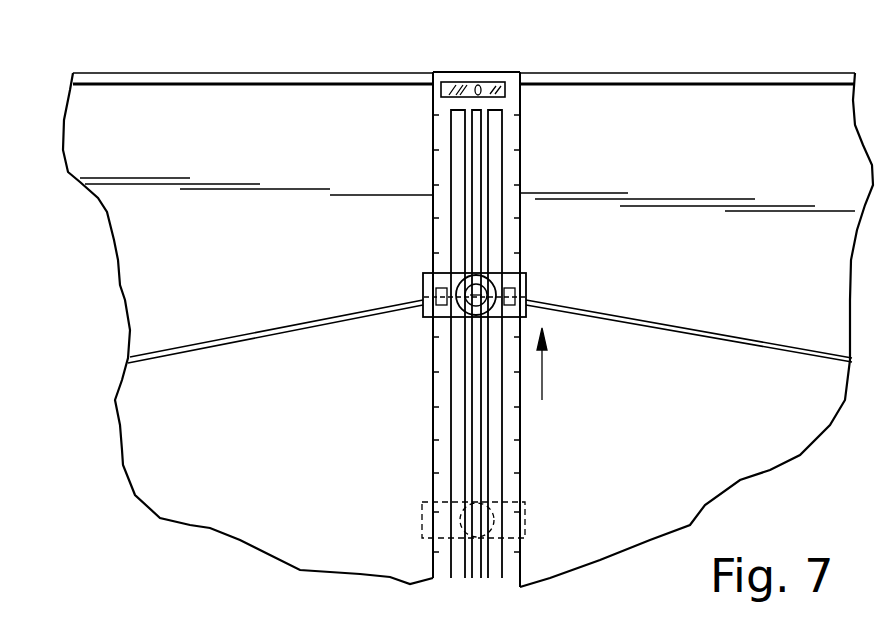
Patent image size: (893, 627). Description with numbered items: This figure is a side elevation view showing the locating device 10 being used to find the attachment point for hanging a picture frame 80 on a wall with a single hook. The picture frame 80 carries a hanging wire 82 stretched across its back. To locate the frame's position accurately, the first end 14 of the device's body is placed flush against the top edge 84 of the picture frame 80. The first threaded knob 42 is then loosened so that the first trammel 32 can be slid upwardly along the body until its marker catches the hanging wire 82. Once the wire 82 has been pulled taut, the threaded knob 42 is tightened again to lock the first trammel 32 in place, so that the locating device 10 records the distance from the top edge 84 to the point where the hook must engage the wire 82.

The locating device 10 is at (541, 520).
The first end 14 is at (470, 72).
The first trammel 32 is at (423, 283).
The first threaded knob 42 is at (466, 308).
The picture frame 80 is at (296, 488).
The hanging wire 82 is at (670, 320).
The top edge 84 is at (318, 38).